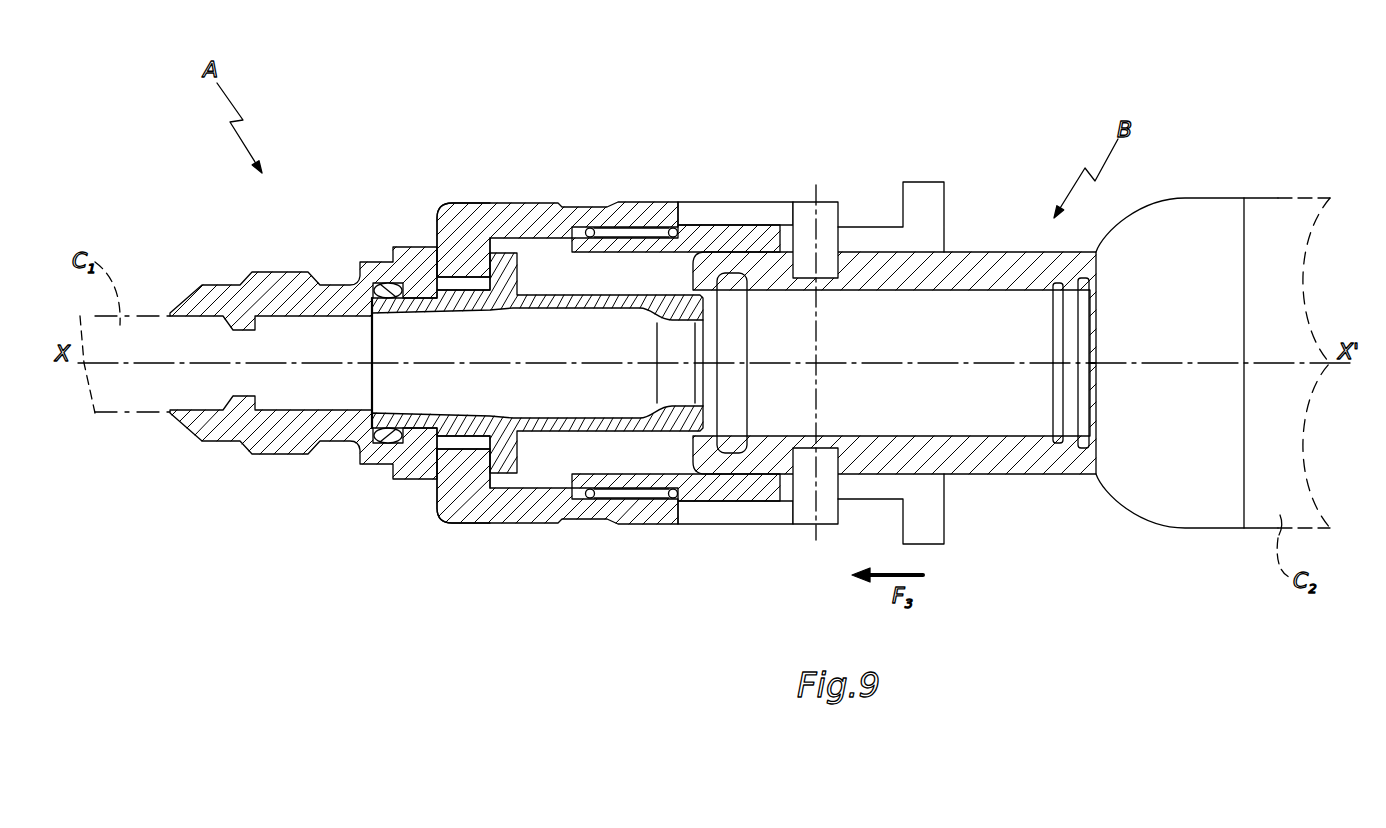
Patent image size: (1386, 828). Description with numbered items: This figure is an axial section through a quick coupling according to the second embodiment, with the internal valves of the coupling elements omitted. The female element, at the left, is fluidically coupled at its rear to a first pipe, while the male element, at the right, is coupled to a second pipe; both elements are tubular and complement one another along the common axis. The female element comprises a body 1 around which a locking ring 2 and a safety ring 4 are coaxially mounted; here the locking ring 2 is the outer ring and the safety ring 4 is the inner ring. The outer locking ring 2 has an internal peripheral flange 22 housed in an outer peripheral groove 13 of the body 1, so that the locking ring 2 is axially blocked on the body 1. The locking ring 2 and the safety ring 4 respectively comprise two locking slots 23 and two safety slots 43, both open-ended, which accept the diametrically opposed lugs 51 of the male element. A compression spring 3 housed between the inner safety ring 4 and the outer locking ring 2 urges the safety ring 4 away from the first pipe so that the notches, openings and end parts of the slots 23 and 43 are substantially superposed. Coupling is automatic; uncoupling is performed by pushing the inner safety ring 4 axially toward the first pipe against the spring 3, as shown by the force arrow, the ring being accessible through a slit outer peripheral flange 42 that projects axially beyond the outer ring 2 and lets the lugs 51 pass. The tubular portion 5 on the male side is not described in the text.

The body 1 is at (295, 435).
The locking ring 2 is at (640, 520).
The compression spring 3 is at (632, 200).
The safety ring 4 is at (880, 233).
The body tube 5 is at (1005, 463).
The outer peripheral groove 13 is at (425, 462).
The internal peripheral flange 22 is at (440, 492).
The locking slots 23 is at (735, 210).
The outer peripheral flange 42 is at (933, 520).
The safety slots 43 is at (785, 223).
The lugs 51 is at (825, 213).